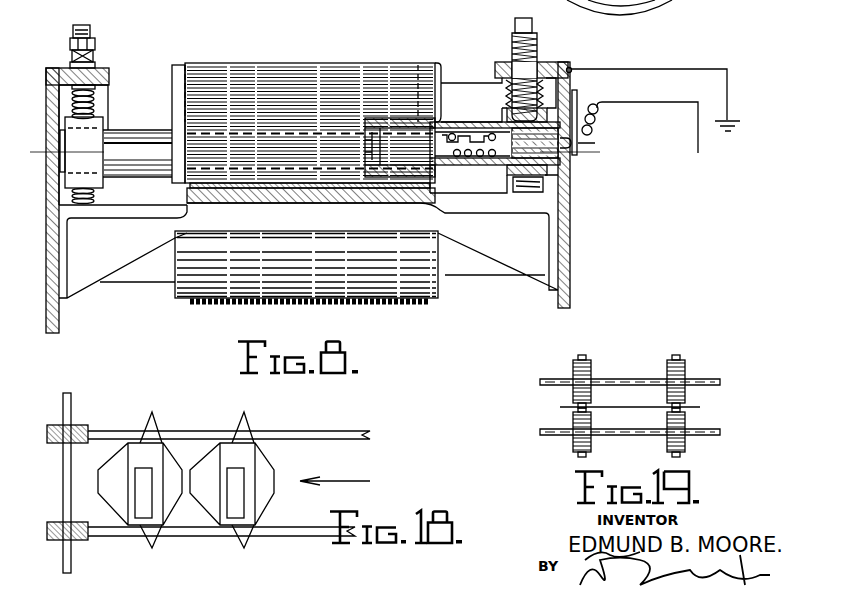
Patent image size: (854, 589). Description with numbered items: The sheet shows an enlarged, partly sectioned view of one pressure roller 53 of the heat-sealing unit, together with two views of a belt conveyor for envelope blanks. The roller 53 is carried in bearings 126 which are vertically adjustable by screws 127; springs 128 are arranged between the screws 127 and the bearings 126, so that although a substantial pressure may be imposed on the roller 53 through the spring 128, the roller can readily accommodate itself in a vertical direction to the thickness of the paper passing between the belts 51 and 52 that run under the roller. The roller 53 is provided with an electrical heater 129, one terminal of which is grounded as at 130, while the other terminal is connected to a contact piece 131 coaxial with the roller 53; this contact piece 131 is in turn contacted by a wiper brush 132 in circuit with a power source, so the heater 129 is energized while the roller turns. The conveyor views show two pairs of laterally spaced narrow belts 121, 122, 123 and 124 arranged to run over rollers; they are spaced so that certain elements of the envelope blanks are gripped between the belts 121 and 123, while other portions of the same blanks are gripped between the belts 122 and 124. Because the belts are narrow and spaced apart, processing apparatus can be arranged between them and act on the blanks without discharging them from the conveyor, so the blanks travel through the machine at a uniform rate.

In FIG. 8, the belt 51 is at (188, 184).
In FIG. 8, the belt 52 is at (188, 193).
In FIG. 8, the pressure roller 53 is at (141, 130).
In FIG. 18, the belt 121 is at (270, 530).
In FIG. 19, the belt 121 is at (576, 358).
In FIG. 18, the belt 122 is at (298, 431).
In FIG. 19, the belt 122 is at (683, 358).
In FIG. 19, the belt 123 is at (576, 453).
In FIG. 19, the belt 124 is at (684, 453).
In FIG. 8, the bearing 126 is at (99, 113).
In FIG. 8, the screw 127 is at (94, 48).
In FIG. 8, the spring 128 is at (99, 94).
In FIG. 8, the electrical heater 129 is at (380, 135).
In FIG. 8, the ground connection 130 is at (470, 122).
In FIG. 8, the contact piece 131 is at (570, 150).
In FIG. 8, the wiper brush 132 is at (590, 110).